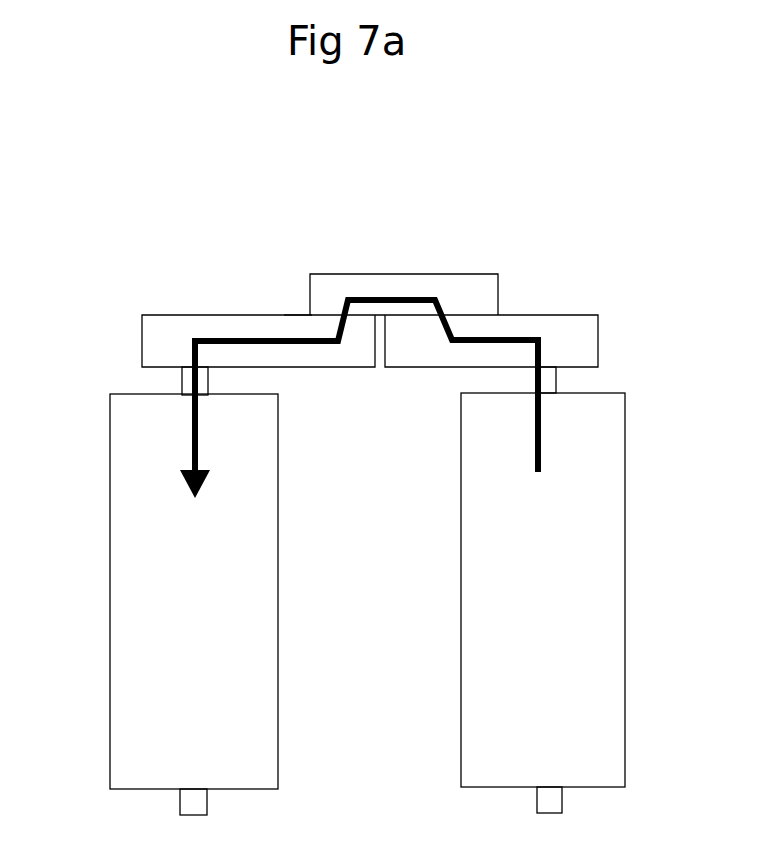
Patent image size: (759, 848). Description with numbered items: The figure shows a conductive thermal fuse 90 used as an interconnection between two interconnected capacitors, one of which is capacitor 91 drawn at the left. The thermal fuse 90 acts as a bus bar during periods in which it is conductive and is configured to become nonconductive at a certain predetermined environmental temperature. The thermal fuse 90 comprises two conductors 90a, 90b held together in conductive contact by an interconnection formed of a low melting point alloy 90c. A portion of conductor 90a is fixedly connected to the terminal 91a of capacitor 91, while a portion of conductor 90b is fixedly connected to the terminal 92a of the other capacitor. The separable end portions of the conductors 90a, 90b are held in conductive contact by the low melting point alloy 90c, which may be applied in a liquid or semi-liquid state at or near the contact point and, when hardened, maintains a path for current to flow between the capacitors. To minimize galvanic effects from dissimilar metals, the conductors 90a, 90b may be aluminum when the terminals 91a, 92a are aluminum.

The conductive thermal fuse 90 is at (82, 183).
The conductor 90a is at (170, 315).
The conductor 90b is at (438, 274).
The low melting point alloy 90c is at (288, 315).
The capacitor 91 is at (194, 604).
The terminal 91a is at (183, 380).
The terminal 92a is at (550, 380).